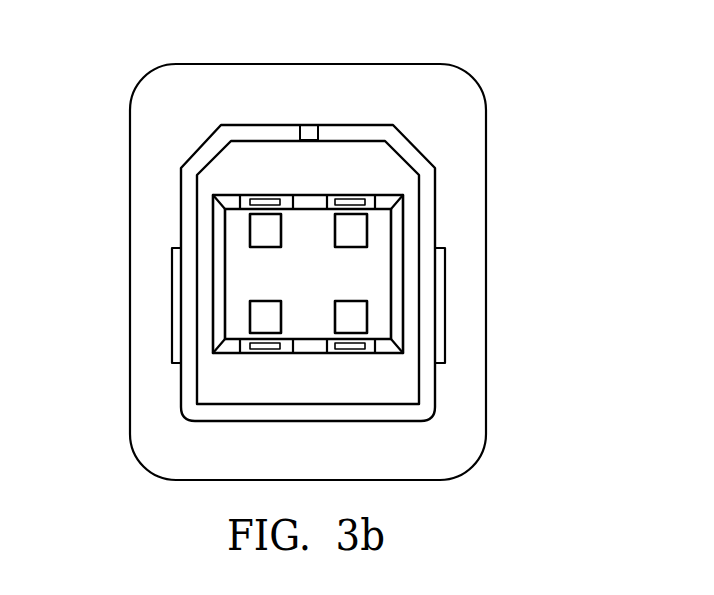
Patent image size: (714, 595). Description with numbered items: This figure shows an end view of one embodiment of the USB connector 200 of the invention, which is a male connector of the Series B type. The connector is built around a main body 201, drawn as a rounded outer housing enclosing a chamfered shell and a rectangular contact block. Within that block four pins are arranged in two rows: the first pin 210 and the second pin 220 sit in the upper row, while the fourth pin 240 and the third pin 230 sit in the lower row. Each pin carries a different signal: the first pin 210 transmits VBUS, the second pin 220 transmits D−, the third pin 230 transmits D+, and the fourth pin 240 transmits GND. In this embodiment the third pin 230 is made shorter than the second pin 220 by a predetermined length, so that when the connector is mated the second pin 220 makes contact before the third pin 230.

The USB connector 200 is at (629, 63).
The main body 201 is at (165, 123).
The first pin 210 is at (250, 230).
The second pin 220 is at (367, 230).
The third pin 230 is at (367, 317).
The fourth pin 240 is at (250, 317).